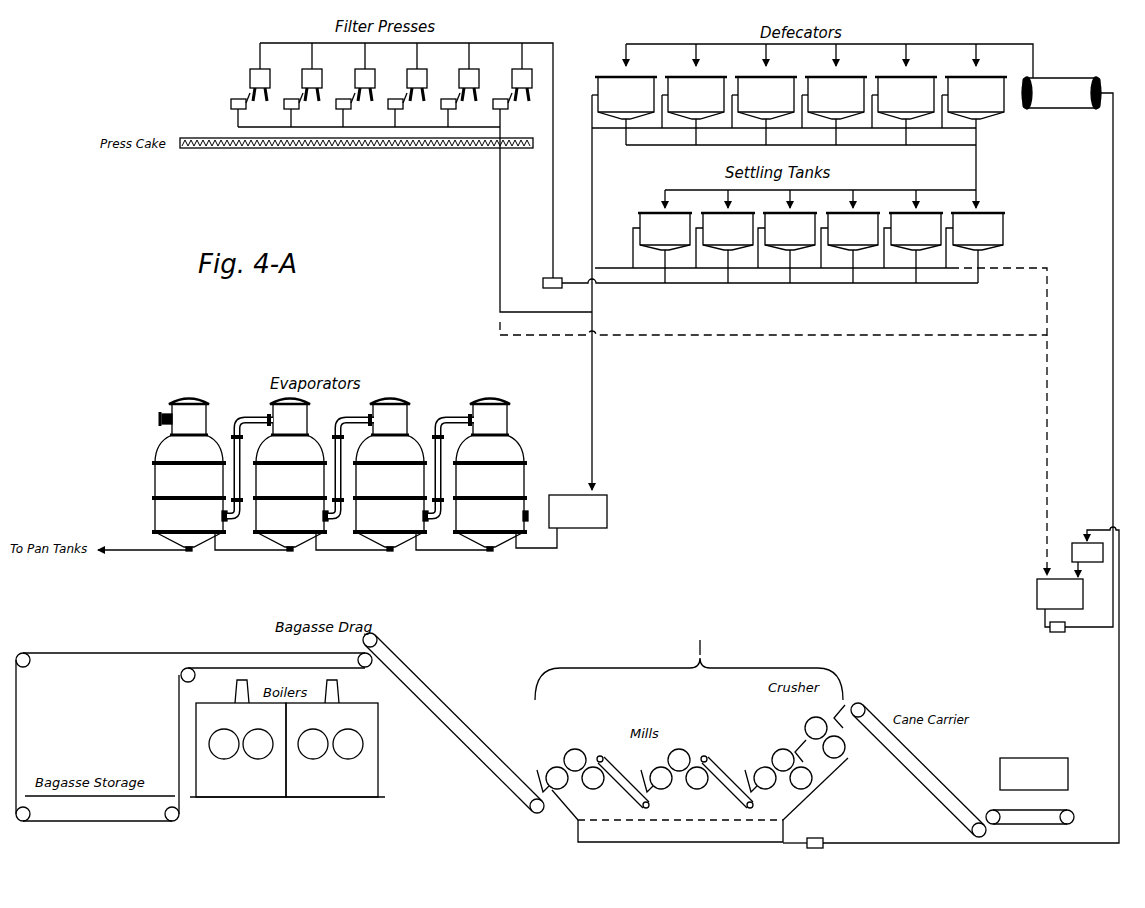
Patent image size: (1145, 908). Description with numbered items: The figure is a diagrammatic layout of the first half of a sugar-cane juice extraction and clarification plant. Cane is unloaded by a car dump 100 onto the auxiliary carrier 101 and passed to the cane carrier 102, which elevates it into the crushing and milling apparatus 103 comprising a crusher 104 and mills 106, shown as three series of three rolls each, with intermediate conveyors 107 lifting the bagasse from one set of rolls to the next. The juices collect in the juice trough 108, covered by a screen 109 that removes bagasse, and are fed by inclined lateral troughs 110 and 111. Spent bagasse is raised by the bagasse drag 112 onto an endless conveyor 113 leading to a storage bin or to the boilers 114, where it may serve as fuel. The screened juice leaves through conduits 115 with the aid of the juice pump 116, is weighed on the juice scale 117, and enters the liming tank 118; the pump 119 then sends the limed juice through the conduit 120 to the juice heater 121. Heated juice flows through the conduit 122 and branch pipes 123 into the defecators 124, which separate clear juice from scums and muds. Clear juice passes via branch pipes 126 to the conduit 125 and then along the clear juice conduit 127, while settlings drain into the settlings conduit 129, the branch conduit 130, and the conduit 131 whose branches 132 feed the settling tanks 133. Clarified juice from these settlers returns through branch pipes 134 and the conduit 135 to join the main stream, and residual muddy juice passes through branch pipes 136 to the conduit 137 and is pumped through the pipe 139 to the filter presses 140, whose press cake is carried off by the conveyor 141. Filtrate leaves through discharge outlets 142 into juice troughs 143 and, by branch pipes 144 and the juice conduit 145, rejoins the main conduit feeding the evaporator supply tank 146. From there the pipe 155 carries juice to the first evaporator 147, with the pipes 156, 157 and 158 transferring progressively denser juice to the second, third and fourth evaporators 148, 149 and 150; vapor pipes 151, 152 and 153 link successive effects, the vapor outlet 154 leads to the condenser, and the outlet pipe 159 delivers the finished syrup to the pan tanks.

The car dump 100 is at (1034, 767).
The auxiliary carrier 101 is at (1030, 820).
The cane carrier 102 is at (918, 770).
The crushers and mills apparatus 103 is at (689, 662).
The crusher 104 is at (820, 731).
The mills 106 is at (674, 765).
The intermediate conveyors 107 is at (675, 782).
The juice trough 108 is at (680, 831).
The screen 109 is at (680, 814).
The lateral trough 110 is at (568, 805).
The lateral trough 111 is at (815, 789).
The bagasse drag 112 is at (453, 723).
The endless conveyor 113 is at (194, 729).
The boilers 114 is at (287, 738).
The conduits 115 is at (982, 685).
The juice pump 116 is at (816, 851).
The juice scale 117 is at (1087, 560).
The liming tank 118 is at (1069, 594).
The pump 119 is at (1058, 632).
The conduit 120 is at (1044, 360).
The juice heater 121 is at (1061, 98).
The conduit 122 is at (829, 54).
The branch pipes 123 is at (789, 55).
The defecators 124 is at (801, 111).
The conduit 125 is at (784, 122).
The branch pipes 126 is at (762, 111).
The clear juice conduit 127 is at (584, 309).
The settlings conduit 129 is at (801, 140).
The branch conduit 130 is at (967, 167).
The conduit 131 is at (820, 184).
The branches 132 is at (811, 199).
The settling tanks 133 is at (821, 248).
The branch pipes 134 is at (785, 248).
The conduit 135 is at (773, 262).
The branch pipes 136 is at (551, 290).
The conduit 137 is at (770, 278).
The pipe 139 is at (406, 160).
The filter presses 140 is at (391, 72).
The conveyor 141 is at (356, 149).
The discharge outlets 142 is at (369, 90).
The juice troughs 143 is at (360, 104).
The branch pipes 144 is at (335, 117).
The juice conduit 145 is at (415, 210).
The evaporator supply tank 146 is at (578, 518).
The first evaporator 147 is at (490, 475).
The second evaporator 148 is at (390, 475).
The third evaporator 149 is at (290, 475).
The fourth evaporator 150 is at (189, 475).
The vapor pipe 151 is at (449, 462).
The vapor pipe 152 is at (351, 470).
The vapor pipe 153 is at (250, 470).
The vapor outlet 154 is at (154, 419).
The pipe 155 is at (536, 538).
The pipe 156 is at (453, 541).
The pipe 157 is at (353, 541).
The pipe 158 is at (252, 541).
The outlet pipe 159 is at (143, 544).